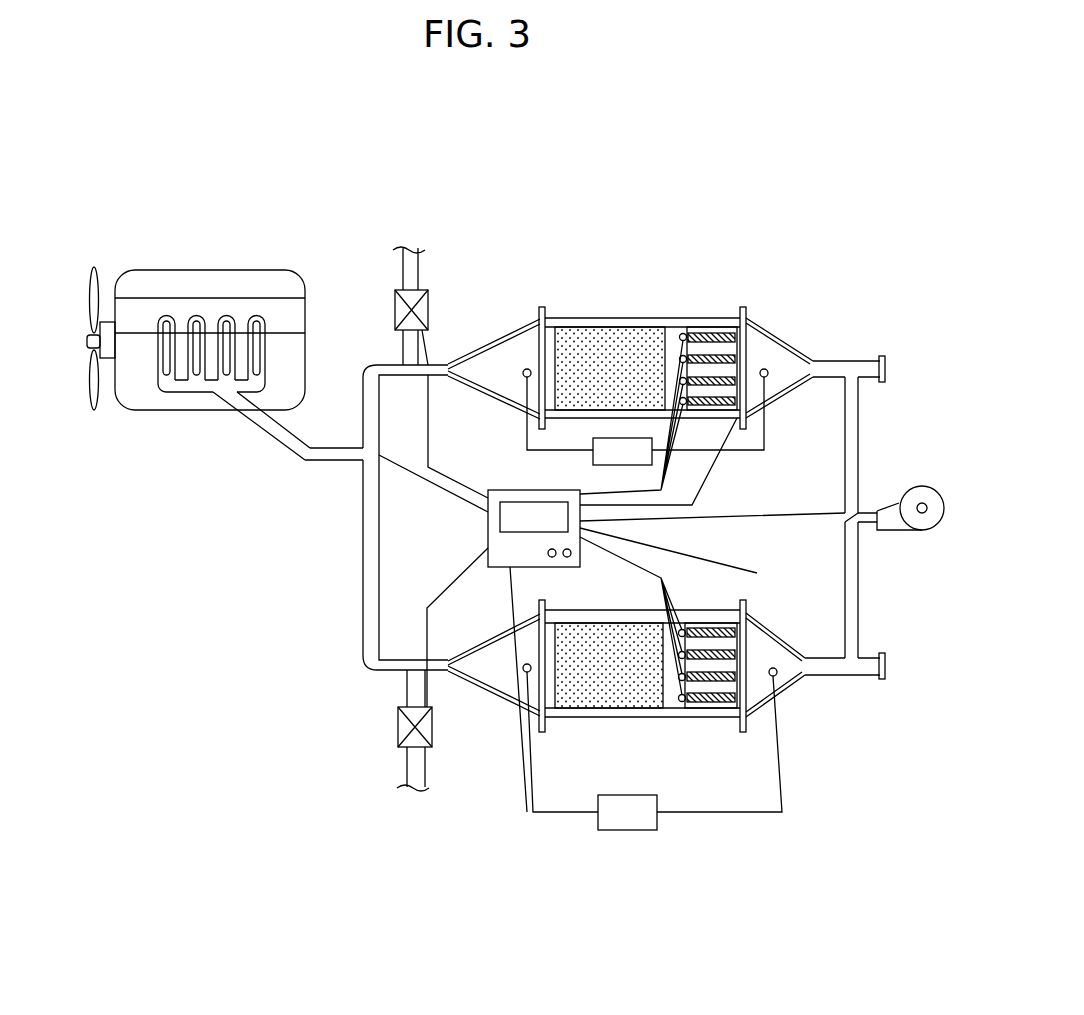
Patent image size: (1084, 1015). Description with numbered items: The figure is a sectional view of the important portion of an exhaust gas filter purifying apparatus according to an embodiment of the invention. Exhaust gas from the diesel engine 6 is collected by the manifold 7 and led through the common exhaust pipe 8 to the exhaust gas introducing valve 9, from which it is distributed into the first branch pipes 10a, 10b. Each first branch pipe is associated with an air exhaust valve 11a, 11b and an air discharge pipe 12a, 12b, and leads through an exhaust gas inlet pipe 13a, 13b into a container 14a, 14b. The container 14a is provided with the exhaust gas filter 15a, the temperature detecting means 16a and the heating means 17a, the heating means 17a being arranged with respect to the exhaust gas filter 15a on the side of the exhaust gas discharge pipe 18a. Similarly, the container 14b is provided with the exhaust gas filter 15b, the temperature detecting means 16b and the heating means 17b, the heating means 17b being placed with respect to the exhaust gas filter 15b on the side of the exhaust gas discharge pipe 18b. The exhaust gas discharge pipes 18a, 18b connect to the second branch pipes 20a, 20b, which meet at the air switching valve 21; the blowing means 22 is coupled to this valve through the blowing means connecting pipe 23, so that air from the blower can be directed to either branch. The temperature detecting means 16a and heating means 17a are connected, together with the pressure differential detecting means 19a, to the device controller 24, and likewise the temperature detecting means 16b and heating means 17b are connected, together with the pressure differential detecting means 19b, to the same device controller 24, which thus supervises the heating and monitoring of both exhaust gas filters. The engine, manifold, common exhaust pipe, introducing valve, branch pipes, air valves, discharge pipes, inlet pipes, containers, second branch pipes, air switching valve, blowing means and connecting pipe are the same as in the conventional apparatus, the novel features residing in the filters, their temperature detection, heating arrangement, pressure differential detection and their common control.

The diesel engine 6 is at (180, 270).
The manifold 7 is at (152, 413).
The common exhaust pipe 8 is at (253, 427).
The exhaust gas introducing valve 9 is at (357, 463).
The first branch pipe 10a is at (366, 368).
The first branch pipe 10b is at (377, 670).
The air exhaust valve 11a is at (425, 310).
The air exhaust valve 11b is at (433, 725).
The air discharge pipe 12a is at (400, 268).
The air discharge pipe 12b is at (402, 763).
The exhaust gas inlet pipe 13a is at (513, 335).
The exhaust gas inlet pipe 13b is at (503, 695).
The container 14a is at (618, 318).
The container 14b is at (618, 718).
The exhaust gas filter 15a is at (575, 327).
The exhaust gas filter 15b is at (573, 713).
The temperature detecting means 16a is at (682, 335).
The temperature detecting means 16b is at (680, 707).
The heating means 17a is at (708, 350).
The heating means 17b is at (703, 653).
The exhaust gas discharge pipe 18a is at (848, 360).
The exhaust gas discharge pipe 18b is at (848, 677).
The pressure differential detecting means 19a is at (593, 458).
The pressure differential detecting means 19b is at (620, 832).
The second branch pipe 20a is at (860, 407).
The second branch pipe 20b is at (860, 612).
The air switching valve 21 is at (847, 515).
The blowing means 22 is at (912, 487).
The blowing means connecting pipe 23 is at (868, 525).
The device controller 24 is at (487, 527).